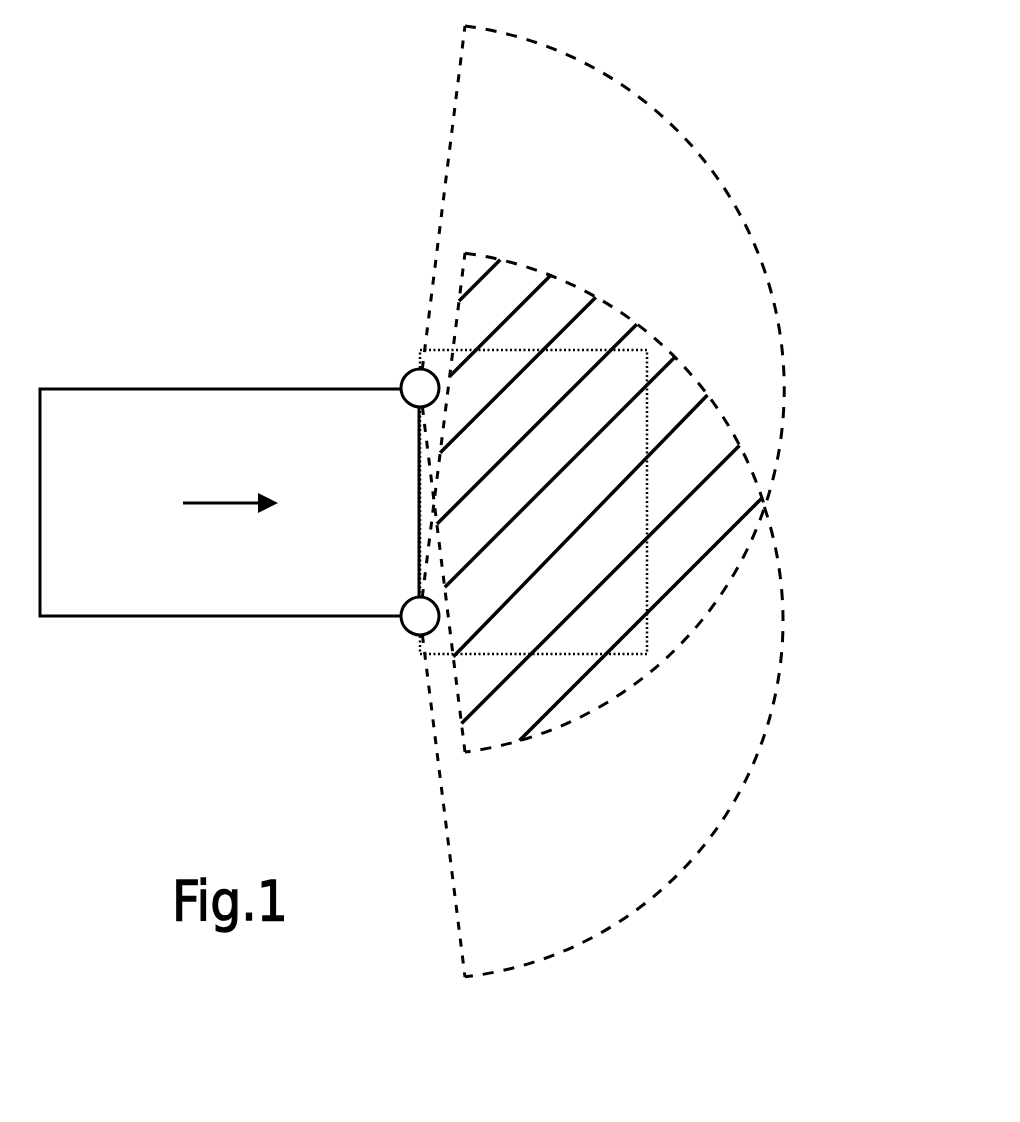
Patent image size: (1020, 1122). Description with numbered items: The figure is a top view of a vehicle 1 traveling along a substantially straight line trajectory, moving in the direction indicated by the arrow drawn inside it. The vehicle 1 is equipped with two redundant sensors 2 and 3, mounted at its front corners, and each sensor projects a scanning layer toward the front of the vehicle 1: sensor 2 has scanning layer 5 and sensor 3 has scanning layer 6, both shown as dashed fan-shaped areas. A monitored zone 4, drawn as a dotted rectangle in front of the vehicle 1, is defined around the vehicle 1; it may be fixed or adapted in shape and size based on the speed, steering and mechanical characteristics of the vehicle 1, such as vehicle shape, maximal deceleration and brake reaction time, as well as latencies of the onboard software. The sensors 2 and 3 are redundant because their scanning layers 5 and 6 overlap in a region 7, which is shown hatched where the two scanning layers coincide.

The vehicle 1 is at (133, 617).
The sensor 2 is at (405, 628).
The sensor 3 is at (407, 375).
The monitored zone 4 is at (647, 427).
The scanning layer 5 is at (727, 812).
The scanning layer 6 is at (738, 215).
The overlap region 7 is at (703, 522).